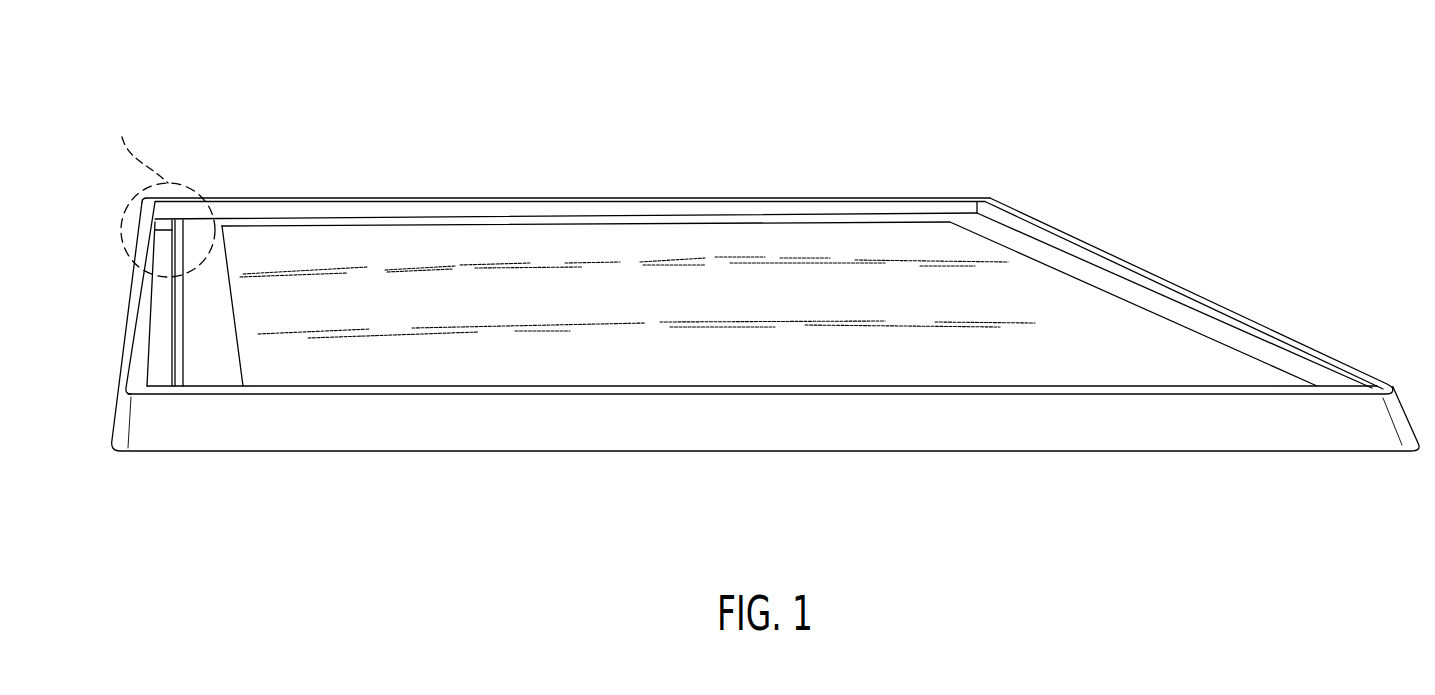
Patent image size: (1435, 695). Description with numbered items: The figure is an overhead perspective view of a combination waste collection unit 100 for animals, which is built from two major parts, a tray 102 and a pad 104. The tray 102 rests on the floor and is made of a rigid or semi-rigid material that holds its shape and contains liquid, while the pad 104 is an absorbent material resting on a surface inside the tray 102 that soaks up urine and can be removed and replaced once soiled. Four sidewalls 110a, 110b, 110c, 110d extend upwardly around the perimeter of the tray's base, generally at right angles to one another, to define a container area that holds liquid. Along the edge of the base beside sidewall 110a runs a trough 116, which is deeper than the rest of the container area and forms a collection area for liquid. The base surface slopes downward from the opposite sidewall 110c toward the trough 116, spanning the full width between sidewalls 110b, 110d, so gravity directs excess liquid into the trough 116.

The combination waste collection unit 100 is at (170, 72).
The tray 102 is at (335, 442).
The pad 104 is at (702, 252).
The sidewall 110a is at (127, 312).
The sidewall 110b is at (460, 205).
The sidewall 110c is at (1040, 237).
The sidewall 110d is at (557, 440).
The trough 116 is at (150, 347).